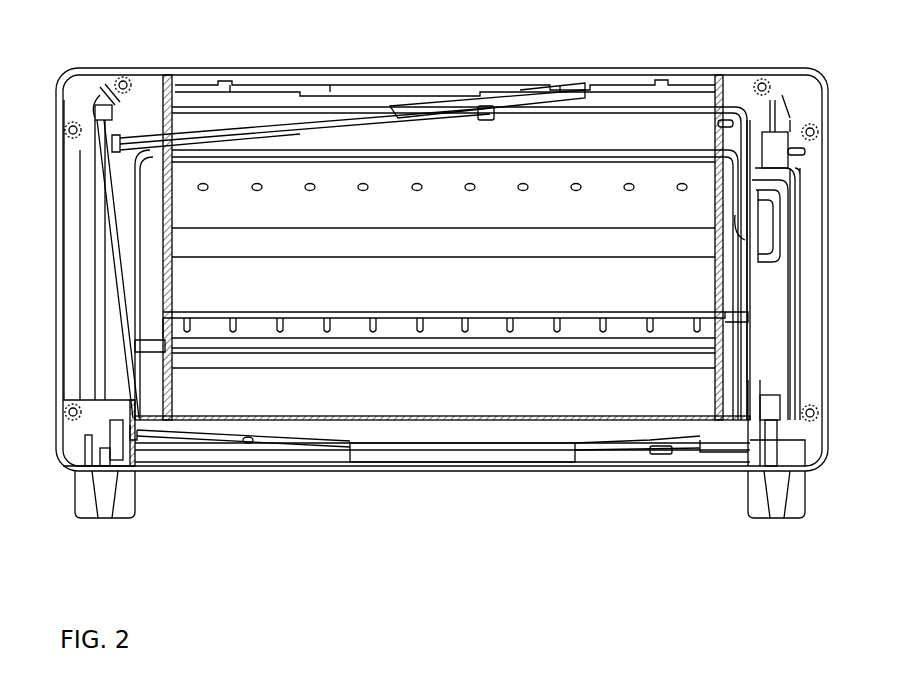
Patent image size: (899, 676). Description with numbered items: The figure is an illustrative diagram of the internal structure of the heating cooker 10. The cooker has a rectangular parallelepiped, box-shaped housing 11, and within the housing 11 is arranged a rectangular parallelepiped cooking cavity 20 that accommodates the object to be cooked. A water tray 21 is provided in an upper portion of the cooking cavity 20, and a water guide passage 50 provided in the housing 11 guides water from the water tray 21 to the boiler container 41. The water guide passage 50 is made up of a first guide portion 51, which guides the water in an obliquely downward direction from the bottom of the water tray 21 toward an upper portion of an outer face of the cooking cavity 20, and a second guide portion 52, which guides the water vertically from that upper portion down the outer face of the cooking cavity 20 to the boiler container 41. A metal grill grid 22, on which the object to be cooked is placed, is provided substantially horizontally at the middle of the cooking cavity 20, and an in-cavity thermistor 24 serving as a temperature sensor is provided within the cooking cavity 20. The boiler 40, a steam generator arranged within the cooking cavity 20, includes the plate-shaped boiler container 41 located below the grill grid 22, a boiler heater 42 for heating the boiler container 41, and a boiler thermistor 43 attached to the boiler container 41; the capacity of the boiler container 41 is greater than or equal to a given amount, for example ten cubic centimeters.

The heating cooker 10 is at (623, 72).
The housing 11 is at (830, 294).
The cooking cavity 20 is at (160, 173).
The water tray 21 is at (490, 105).
The grill grid 22 is at (478, 323).
The in-cavity thermistor 24 is at (740, 214).
The boiler 40 is at (460, 416).
The boiler container 41 is at (250, 445).
The boiler heater 42 is at (382, 456).
The boiler thermistor 43 is at (660, 456).
The water guide passage 50 is at (388, 122).
The first guide portion 51 is at (490, 118).
The second guide portion 52 is at (120, 212).